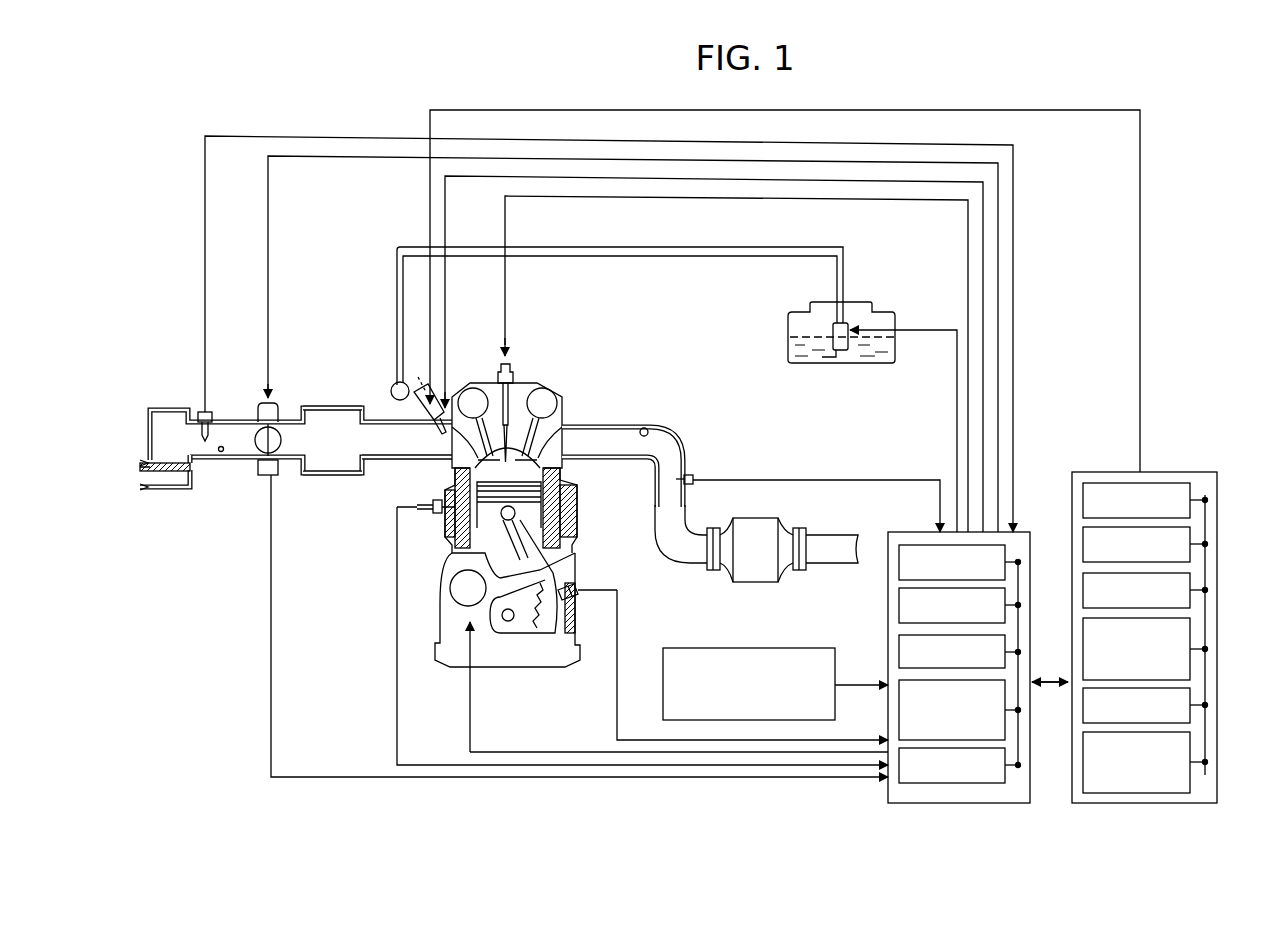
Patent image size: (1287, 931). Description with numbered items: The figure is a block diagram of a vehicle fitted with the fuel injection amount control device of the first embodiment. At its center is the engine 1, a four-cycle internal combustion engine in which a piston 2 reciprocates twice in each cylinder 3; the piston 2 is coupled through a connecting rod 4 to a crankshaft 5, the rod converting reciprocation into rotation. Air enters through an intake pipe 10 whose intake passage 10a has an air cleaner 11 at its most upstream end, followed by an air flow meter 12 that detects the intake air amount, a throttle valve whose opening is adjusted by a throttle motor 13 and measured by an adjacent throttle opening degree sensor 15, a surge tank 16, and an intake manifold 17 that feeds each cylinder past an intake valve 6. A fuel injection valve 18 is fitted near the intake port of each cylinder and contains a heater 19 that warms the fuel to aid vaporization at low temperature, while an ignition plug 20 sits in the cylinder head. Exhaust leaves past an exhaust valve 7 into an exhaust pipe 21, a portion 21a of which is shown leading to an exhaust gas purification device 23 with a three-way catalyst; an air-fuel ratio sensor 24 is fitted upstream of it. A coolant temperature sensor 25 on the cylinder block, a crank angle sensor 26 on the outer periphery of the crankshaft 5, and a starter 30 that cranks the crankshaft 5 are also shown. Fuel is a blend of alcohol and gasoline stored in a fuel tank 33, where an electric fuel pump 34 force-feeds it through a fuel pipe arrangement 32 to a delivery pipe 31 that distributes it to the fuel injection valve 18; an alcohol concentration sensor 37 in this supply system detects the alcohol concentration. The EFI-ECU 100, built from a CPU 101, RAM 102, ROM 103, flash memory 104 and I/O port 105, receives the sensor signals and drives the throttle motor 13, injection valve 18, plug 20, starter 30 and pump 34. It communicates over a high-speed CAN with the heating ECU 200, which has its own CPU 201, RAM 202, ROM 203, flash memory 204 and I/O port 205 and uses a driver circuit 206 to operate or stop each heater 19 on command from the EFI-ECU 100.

The engine 1 is at (484, 501).
The piston 2 is at (500, 522).
The cylinder 3 is at (540, 562).
The connecting rod 4 is at (512, 522).
The crankshaft 5 is at (510, 622).
The intake valve 6 is at (452, 462).
The exhaust valve 7 is at (562, 462).
The intake pipe 10 is at (233, 420).
The intake passage 10a is at (222, 462).
The air cleaner 11 is at (173, 472).
The air flow meter 12 is at (198, 412).
The throttle motor 13 is at (276, 404).
The throttle opening degree sensor 15 is at (275, 476).
The surge tank 16 is at (332, 477).
The intake manifold 17 is at (373, 462).
The fuel injection valve 18 is at (414, 400).
The heater 19 is at (417, 371).
The ignition plug 20 is at (516, 385).
The exhaust pipe 21 is at (604, 422).
The exhaust pipe portion 21a is at (650, 428).
The exhaust gas purification device 23 is at (756, 583).
The air-fuel ratio sensor 24 is at (690, 474).
The coolant temperature sensor 25 is at (436, 514).
The crank angle sensor 26 is at (578, 598).
The starter 30 is at (452, 600).
The delivery pipe 31 is at (391, 388).
The fuel pipe arrangement 32 is at (670, 258).
The fuel tank 33 is at (895, 347).
The fuel pump 34 is at (845, 356).
The alcohol concentration sensor 37 is at (663, 683).
The EFI-ECU 100 is at (955, 653).
The CPU 101 is at (888, 572).
The RAM 102 is at (888, 605).
The ROM 103 is at (888, 648).
The flash memory 104 is at (888, 705).
The I/O port 105 is at (898, 785).
The heating ECU 200 is at (1123, 618).
The CPU 201 is at (1083, 500).
The RAM 202 is at (1083, 544).
The ROM 203 is at (1083, 590).
The flash memory 204 is at (1083, 652).
The I/O port 205 is at (1083, 708).
The driver circuit 206 is at (1083, 766).